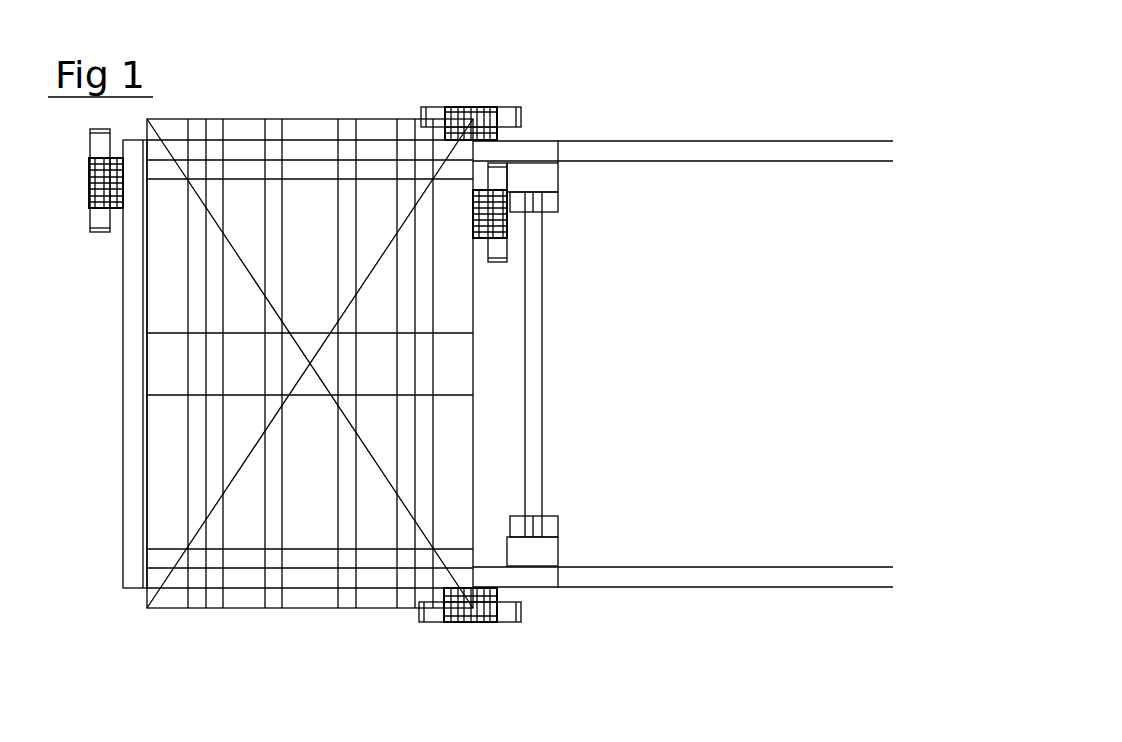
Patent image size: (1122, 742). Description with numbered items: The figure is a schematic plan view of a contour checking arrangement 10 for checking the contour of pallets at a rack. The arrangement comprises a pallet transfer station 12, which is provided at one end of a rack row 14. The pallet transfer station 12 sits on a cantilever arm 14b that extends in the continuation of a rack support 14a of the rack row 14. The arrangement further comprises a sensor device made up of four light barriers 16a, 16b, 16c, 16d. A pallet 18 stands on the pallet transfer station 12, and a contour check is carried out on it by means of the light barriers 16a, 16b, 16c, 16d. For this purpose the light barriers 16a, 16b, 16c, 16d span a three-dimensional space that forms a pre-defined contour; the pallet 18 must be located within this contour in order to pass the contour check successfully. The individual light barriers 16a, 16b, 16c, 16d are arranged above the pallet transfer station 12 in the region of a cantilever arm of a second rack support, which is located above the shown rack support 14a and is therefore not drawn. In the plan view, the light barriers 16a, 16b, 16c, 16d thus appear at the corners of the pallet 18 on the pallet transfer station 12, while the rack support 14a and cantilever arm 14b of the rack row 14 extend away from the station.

The contour checking arrangement 10 is at (665, 121).
The pallet transfer station 12 is at (100, 414).
The rack row 14 is at (745, 380).
The rack support 14a is at (743, 589).
The cantilever arm 14b is at (237, 580).
The light barrier 16a is at (497, 210).
The light barrier 16b is at (480, 107).
The light barrier 16c is at (90, 205).
The light barrier 16d is at (475, 623).
The pallet 18 is at (168, 602).